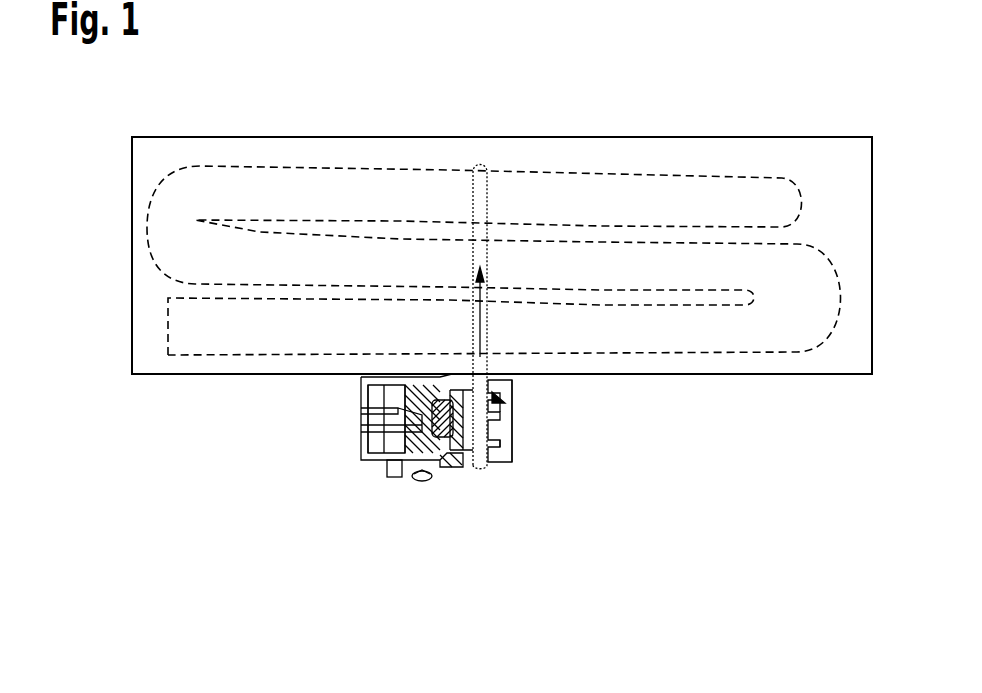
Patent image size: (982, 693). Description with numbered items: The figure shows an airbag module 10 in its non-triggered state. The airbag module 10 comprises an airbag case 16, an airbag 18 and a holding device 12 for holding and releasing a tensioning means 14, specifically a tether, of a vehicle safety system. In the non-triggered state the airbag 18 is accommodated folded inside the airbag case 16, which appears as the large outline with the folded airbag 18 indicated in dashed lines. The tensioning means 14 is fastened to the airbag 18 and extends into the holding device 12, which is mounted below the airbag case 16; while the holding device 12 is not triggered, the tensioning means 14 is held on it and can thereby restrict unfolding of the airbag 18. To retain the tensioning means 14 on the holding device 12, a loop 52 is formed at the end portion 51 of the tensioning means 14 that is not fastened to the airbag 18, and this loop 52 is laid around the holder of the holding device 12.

The airbag module 10 is at (752, 119).
The holding device 12 is at (427, 503).
The tensioning means 14 is at (478, 467).
The airbag case 16 is at (173, 147).
The airbag 18 is at (399, 168).
The end portion 51 is at (505, 394).
The loop 52 is at (505, 420).